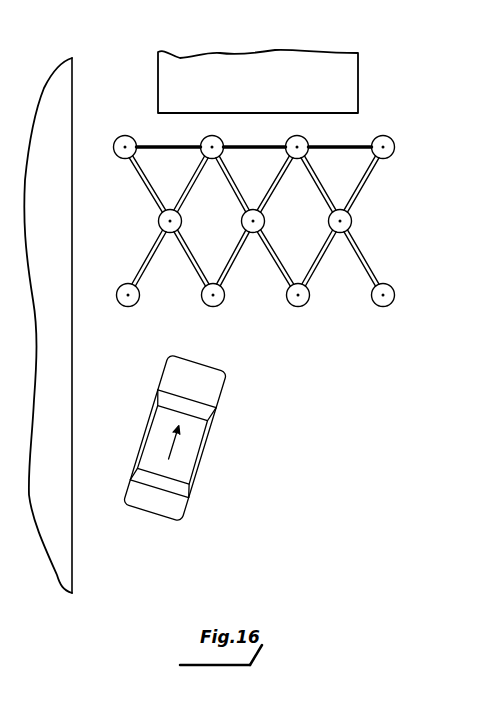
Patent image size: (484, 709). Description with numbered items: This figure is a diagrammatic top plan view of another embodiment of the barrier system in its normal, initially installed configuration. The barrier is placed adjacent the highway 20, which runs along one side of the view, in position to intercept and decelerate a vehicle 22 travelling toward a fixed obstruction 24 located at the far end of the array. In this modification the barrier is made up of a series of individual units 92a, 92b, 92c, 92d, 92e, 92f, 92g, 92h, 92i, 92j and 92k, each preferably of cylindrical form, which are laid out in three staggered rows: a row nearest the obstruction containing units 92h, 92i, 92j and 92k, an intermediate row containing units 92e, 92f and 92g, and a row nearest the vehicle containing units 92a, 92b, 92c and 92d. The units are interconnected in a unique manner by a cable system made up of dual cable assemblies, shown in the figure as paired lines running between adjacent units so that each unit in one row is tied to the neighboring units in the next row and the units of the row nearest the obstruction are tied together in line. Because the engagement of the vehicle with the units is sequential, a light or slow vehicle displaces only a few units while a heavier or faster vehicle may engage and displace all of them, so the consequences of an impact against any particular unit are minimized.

The highway 20 is at (66, 113).
The vehicle 22 is at (212, 402).
The fixed obstruction 24 is at (350, 83).
The individual unit 92a is at (118, 285).
The individual unit 92b is at (203, 290).
The individual unit 92c is at (289, 289).
The individual unit 92d is at (372, 290).
The individual unit 92e is at (158, 221).
The individual unit 92f is at (242, 221).
The individual unit 92g is at (329, 222).
The individual unit 92h is at (116, 139).
The individual unit 92i is at (201, 141).
The individual unit 92j is at (288, 139).
The individual unit 92k is at (373, 142).